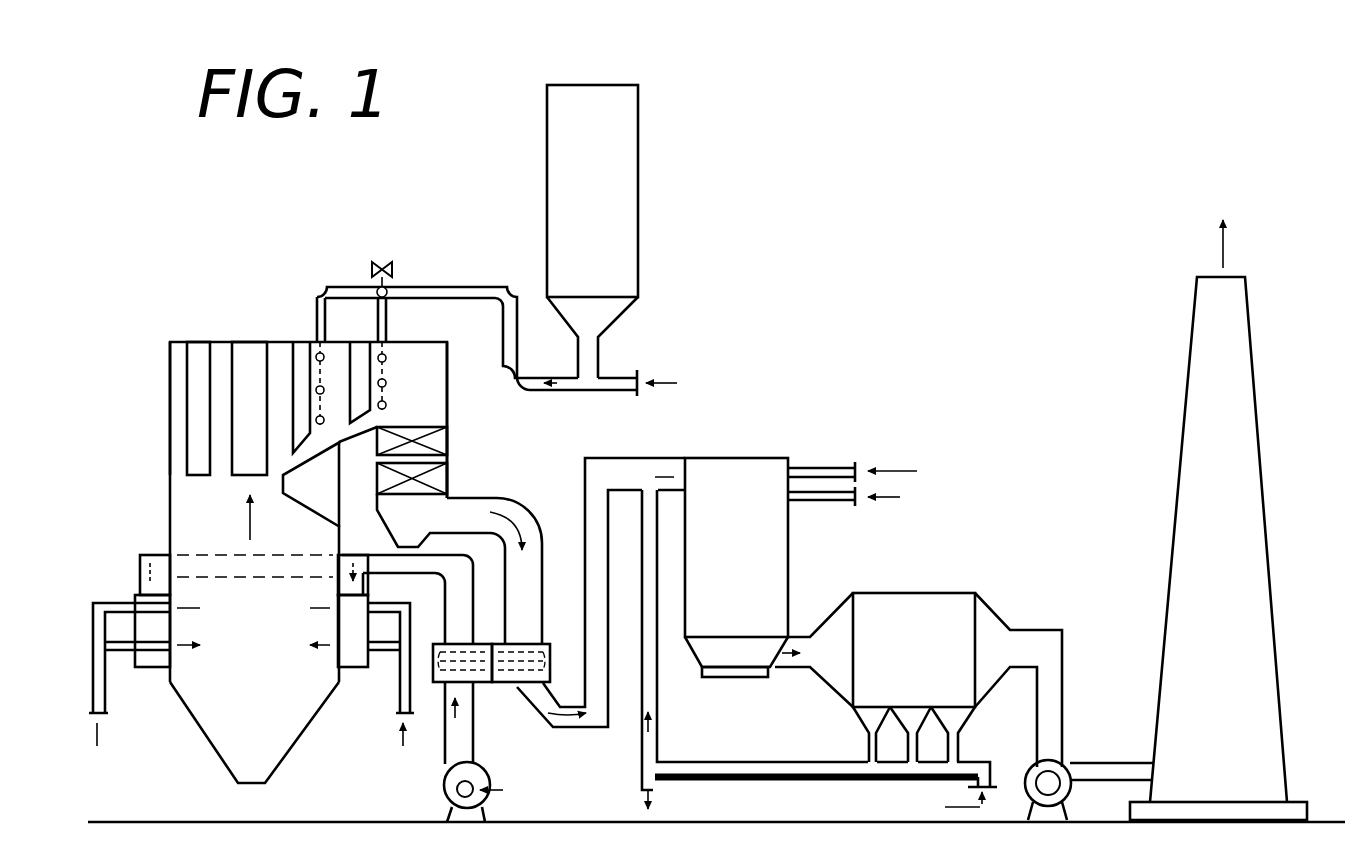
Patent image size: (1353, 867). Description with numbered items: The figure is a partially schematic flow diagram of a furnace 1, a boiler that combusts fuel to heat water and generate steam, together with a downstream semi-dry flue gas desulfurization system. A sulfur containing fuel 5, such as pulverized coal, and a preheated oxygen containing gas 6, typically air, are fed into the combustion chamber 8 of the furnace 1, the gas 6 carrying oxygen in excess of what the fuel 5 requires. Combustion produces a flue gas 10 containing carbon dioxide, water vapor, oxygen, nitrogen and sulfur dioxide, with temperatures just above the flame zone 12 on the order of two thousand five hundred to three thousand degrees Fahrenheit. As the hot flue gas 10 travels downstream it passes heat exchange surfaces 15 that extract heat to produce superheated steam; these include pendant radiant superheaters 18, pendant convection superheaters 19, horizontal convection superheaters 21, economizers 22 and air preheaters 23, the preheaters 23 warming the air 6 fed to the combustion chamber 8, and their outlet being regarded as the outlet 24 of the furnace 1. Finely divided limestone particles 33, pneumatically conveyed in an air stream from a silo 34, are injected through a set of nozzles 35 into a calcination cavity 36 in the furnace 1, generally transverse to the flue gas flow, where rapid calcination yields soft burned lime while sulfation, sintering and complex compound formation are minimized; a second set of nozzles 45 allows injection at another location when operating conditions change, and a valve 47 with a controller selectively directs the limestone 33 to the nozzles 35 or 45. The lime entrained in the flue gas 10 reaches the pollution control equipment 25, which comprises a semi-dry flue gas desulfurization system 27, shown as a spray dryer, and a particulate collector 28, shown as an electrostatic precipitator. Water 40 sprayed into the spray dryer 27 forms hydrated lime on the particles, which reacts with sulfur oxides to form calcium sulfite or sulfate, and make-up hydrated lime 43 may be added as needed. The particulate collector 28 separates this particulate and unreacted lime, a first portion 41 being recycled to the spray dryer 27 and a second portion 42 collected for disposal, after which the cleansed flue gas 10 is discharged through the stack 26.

The furnace 1 is at (168, 341).
The sulfur containing fuel 5 is at (100, 742).
The oxygen containing gas 6 is at (443, 728).
The combustion chamber 8 is at (252, 661).
The flue gas 10 is at (618, 475).
The flame zone 12 is at (253, 617).
The heat exchange surfaces 15 is at (190, 477).
The pendant radiant superheaters 18 is at (248, 333).
The pendant convection superheaters 19 is at (357, 333).
The horizontal convection superheaters 21 is at (445, 415).
The economizers 22 is at (445, 457).
The air preheaters 23 is at (495, 684).
The outlet 24 is at (525, 688).
The pollution control equipment 25 is at (812, 452).
The stack 26 is at (1222, 520).
The semi-dry flue gas desulfurization system 27 is at (740, 550).
The particulate collector 28 is at (913, 654).
The limestone particles 33 is at (557, 377).
The silo 34 is at (641, 201).
The nozzles 35 is at (386, 405).
The calcination cavity 36 is at (428, 388).
The water 40 is at (893, 471).
The first portion of particulate 41 is at (652, 505).
The second portion of particulate 42 is at (656, 788).
The make-up hydrated lime 43 is at (887, 504).
The second set of nozzles 45 is at (316, 420).
The valve 47 is at (380, 260).